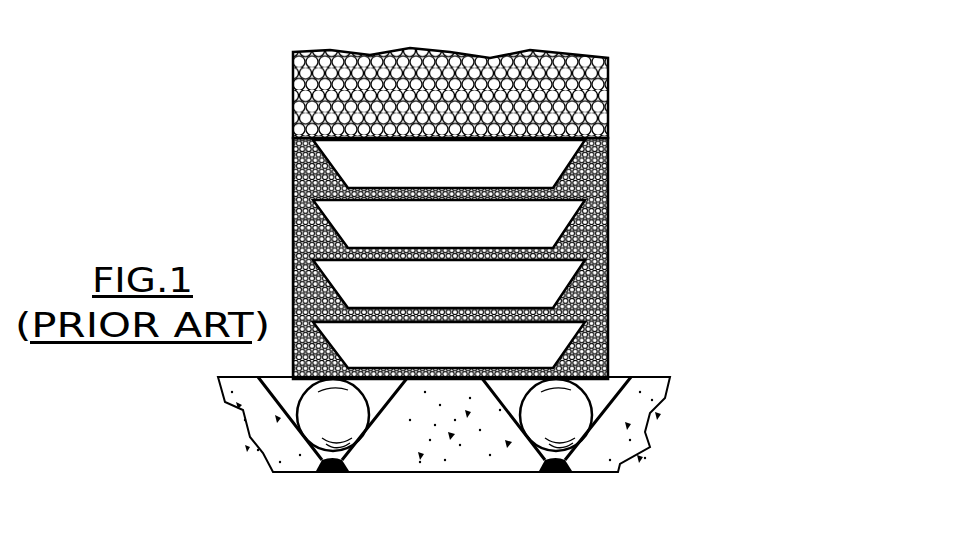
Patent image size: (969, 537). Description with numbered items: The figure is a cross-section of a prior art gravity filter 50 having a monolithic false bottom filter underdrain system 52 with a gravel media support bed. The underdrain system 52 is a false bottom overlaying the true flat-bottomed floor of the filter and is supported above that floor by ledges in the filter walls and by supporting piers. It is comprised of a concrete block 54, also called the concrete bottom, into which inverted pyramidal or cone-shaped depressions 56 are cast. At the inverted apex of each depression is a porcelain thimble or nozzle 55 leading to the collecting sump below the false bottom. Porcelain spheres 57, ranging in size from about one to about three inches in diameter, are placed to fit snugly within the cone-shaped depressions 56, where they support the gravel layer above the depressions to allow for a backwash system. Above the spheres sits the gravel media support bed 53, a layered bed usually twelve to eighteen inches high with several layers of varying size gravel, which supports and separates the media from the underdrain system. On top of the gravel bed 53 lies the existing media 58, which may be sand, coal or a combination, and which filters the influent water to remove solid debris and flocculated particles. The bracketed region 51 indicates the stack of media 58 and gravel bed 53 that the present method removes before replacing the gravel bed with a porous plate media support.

The gravity filter 50 is at (734, 322).
The stack 51 is at (252, 164).
The filter underdrain system 52 is at (715, 378).
The gravel media support bed 53 is at (648, 150).
The concrete block 54 is at (467, 455).
The porcelain thimble 55 is at (558, 475).
The cone-shaped depressions 56 is at (280, 410).
The porcelain spheres 57 is at (580, 430).
The media 58 is at (608, 92).